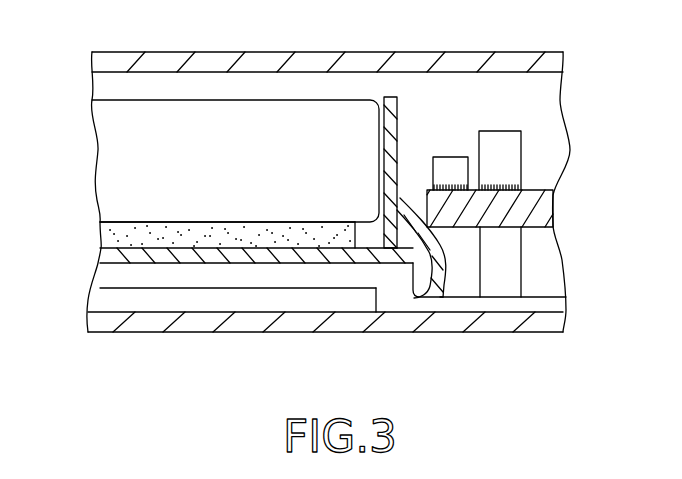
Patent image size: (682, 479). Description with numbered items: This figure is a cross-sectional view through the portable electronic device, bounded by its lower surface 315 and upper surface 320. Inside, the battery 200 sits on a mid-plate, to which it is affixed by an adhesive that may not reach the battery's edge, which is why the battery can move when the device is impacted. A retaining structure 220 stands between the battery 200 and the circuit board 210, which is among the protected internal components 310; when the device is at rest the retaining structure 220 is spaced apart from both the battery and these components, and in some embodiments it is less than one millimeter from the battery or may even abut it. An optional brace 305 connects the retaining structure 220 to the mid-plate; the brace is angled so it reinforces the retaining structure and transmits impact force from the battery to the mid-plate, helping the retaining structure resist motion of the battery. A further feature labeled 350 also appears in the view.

The battery 200 is at (149, 100).
The lower surface 315 is at (306, 56).
The retaining structure 220 is at (392, 97).
The protected/internal components 310 is at (457, 157).
The circuit board 210 is at (547, 162).
The adhesive layer 350 is at (111, 236).
The upper surface 320 is at (246, 322).
The brace 305 is at (400, 207).